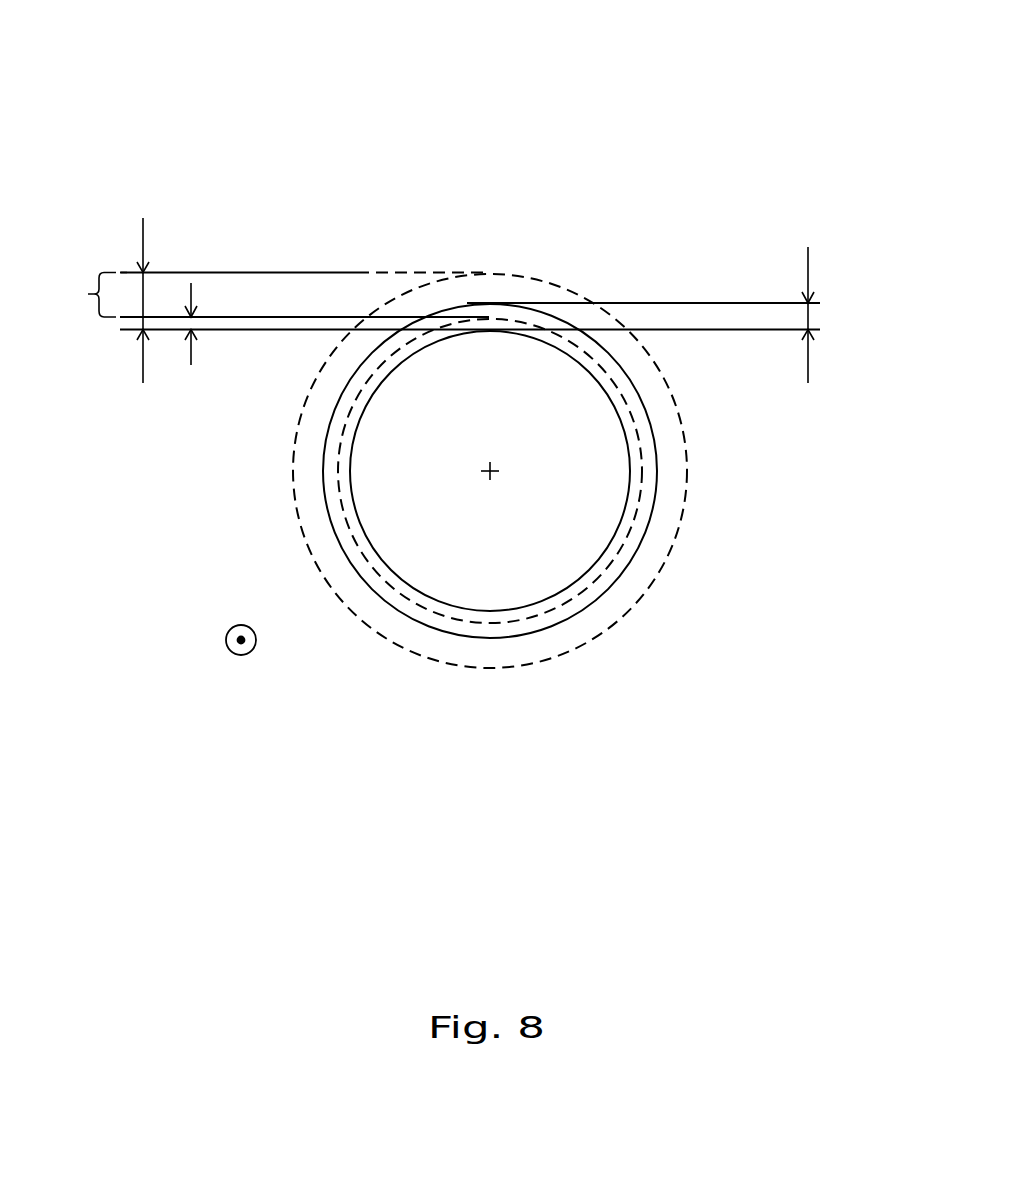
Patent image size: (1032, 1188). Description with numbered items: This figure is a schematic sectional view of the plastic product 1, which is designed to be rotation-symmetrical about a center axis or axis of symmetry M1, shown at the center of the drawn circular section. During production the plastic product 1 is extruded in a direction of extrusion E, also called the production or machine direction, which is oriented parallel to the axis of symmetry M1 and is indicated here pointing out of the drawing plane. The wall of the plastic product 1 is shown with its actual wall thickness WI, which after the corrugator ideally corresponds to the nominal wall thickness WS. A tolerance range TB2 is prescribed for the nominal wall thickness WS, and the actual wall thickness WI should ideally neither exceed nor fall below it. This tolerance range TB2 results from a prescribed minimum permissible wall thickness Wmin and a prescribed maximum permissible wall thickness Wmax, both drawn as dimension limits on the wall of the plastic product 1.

The plastic product 1 is at (493, 118).
The maximum permissible wall thickness Wmax is at (189, 300).
The minimum permissible wall thickness Wmin is at (236, 328).
The tolerance range TB2 is at (74, 295).
The actual wall thickness WI is at (864, 315).
The nominal wall thickness WS is at (864, 315).
The direction of extrusion E is at (241, 662).
The axis of symmetry M1 is at (492, 478).